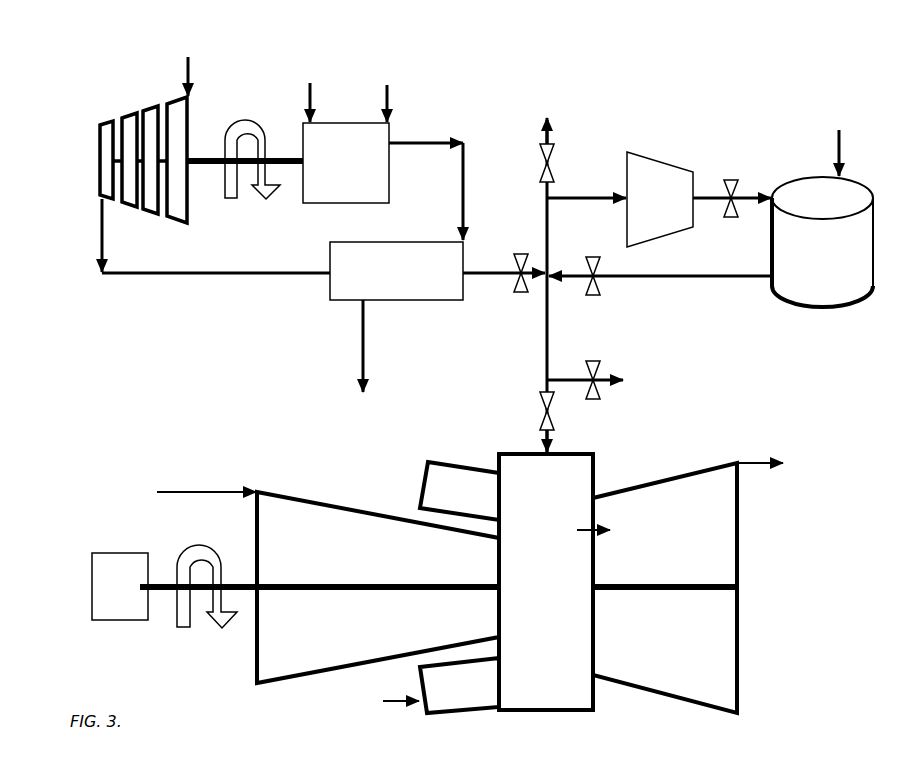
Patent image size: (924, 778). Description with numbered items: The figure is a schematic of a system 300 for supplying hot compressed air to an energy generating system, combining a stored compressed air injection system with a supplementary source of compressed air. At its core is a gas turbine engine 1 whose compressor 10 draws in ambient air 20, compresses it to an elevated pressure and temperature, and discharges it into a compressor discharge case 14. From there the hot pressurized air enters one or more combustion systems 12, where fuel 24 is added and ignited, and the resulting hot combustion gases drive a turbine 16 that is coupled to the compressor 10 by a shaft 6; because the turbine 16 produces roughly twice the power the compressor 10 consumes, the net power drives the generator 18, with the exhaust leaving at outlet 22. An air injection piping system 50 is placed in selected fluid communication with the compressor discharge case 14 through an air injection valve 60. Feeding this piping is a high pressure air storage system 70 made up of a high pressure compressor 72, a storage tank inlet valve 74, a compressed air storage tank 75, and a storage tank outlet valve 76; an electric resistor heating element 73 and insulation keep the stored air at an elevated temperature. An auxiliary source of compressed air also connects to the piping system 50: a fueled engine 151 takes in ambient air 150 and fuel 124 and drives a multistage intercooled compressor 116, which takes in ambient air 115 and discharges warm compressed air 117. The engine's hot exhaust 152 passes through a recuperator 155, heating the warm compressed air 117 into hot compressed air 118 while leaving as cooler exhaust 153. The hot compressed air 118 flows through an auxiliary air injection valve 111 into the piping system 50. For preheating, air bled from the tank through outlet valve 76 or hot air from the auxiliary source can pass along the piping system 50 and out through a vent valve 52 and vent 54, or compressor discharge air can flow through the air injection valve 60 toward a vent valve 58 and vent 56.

The gas turbine engine 1 is at (277, 457).
The shaft 6 is at (343, 593).
The compressor 10 is at (378, 587).
The combustion system 12 is at (459, 491).
The compressor discharge case 14 is at (554, 582).
The turbine 16 is at (665, 588).
The generator 18 is at (120, 586).
The ambient air 20 is at (184, 496).
The exhaust outlet 22 is at (760, 453).
The fuel 24 is at (425, 685).
The air injection piping system 50 is at (534, 286).
The vent valve 52 is at (595, 370).
The vent 54 is at (599, 380).
The vent 56 is at (546, 124).
The vent valve 58 is at (531, 163).
The air injection valve 60 is at (559, 422).
The high pressure air storage system 70 is at (690, 135).
The high pressure compressor 72 is at (620, 199).
The electric resistor heating element 73 is at (838, 141).
The storage tank inlet valve 74 is at (732, 211).
The compressed air storage tank 75 is at (822, 242).
The storage tank outlet valve 76 is at (660, 287).
The auxiliary air injection valve 111 is at (518, 263).
The ambient air 115 is at (188, 66).
The multistage intercooled compressor 116 is at (133, 133).
The warm compressed air 117 is at (216, 253).
The hot compressed air 118 is at (504, 287).
The fuel 124 is at (310, 93).
The ambient air 150 is at (387, 94).
The fueled engine 151 is at (346, 163).
The hot exhaust 152 is at (429, 177).
The cooler exhaust 153 is at (340, 346).
The recuperator 155 is at (396, 271).
The system 300 is at (843, 473).